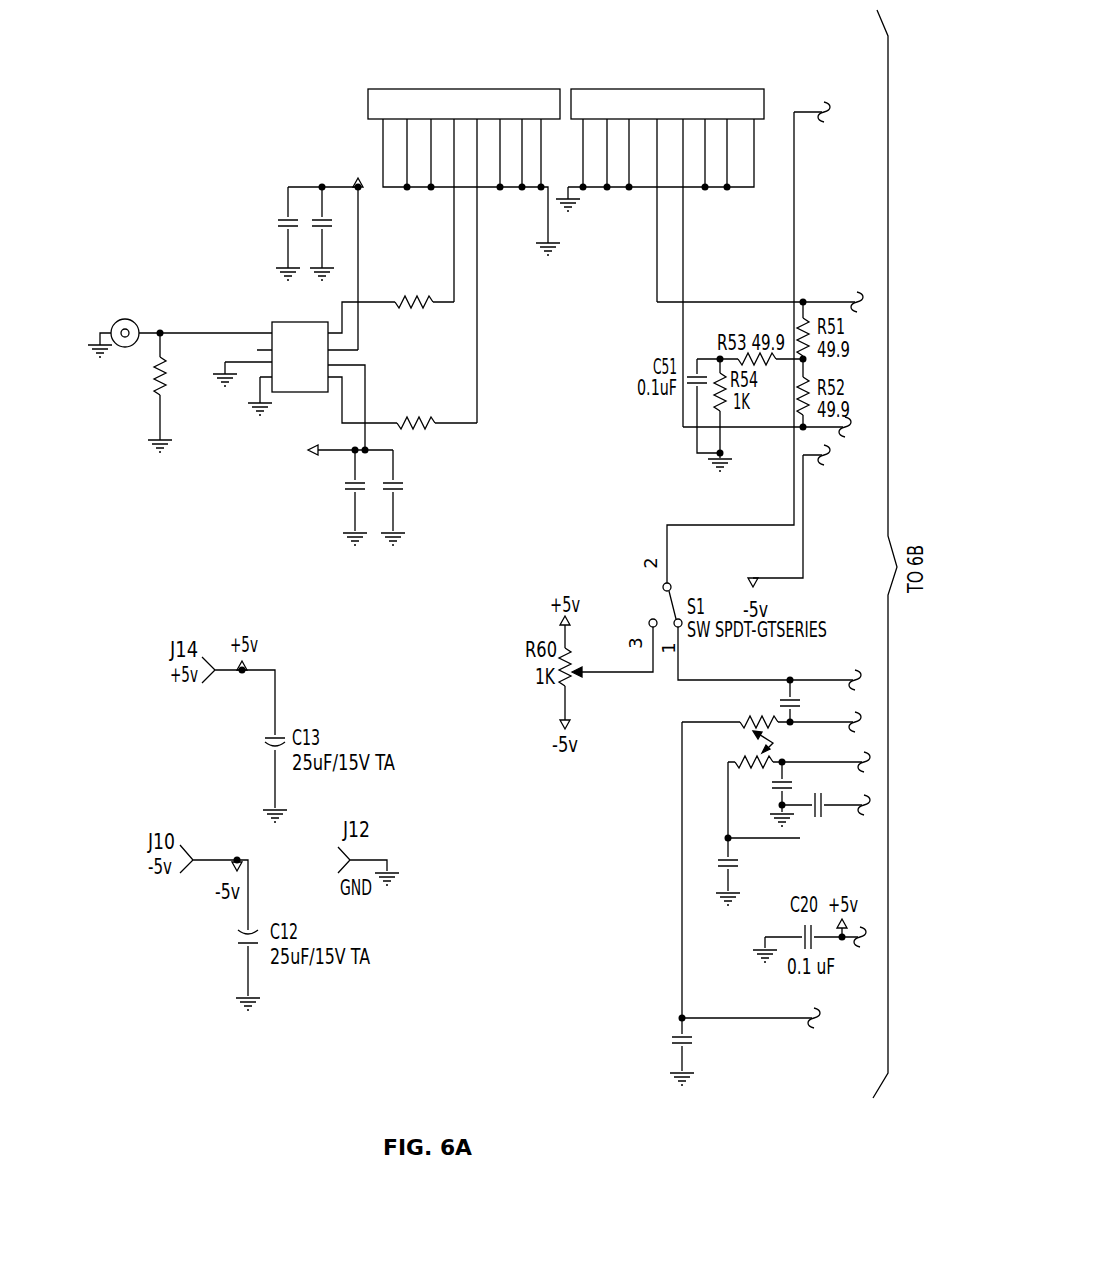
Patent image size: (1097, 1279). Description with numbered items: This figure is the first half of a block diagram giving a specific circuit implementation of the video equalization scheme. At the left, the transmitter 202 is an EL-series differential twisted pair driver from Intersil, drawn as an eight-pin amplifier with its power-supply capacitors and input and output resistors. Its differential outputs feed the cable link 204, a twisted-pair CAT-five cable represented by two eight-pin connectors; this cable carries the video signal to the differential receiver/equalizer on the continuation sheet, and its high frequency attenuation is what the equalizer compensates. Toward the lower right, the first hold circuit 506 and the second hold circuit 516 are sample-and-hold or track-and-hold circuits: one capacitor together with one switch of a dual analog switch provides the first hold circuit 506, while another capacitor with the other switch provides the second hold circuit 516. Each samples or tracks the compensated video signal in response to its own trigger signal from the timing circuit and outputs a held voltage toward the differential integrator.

The transmitter 202 is at (260, 273).
The cable link 204 is at (690, 48).
The first hold circuit 506 is at (641, 892).
The second hold circuit 516 is at (707, 859).